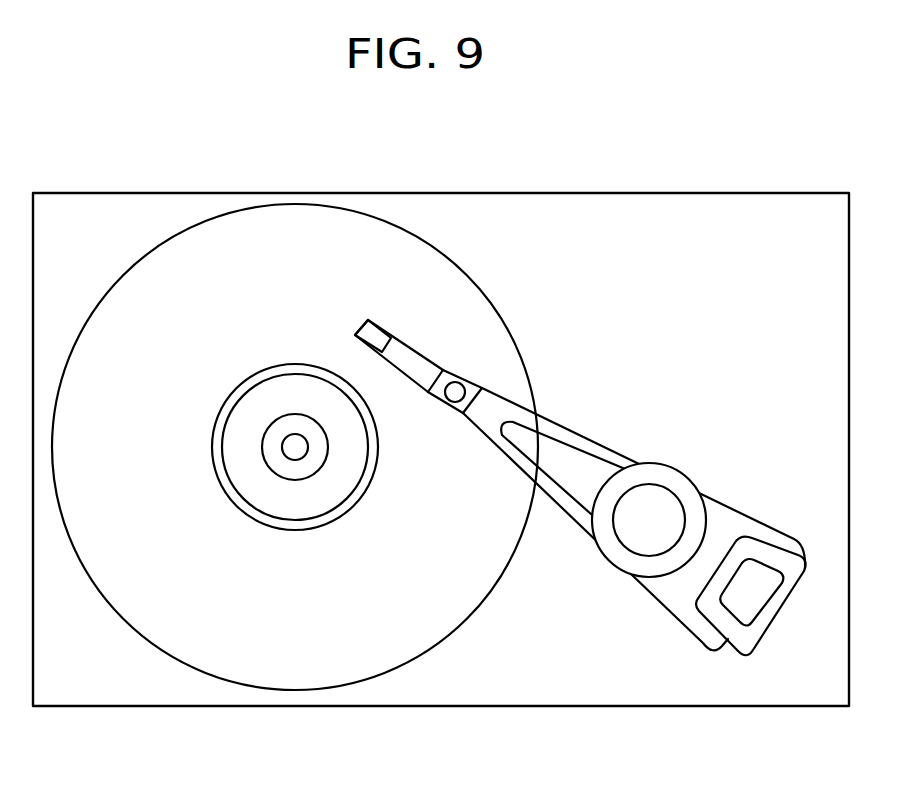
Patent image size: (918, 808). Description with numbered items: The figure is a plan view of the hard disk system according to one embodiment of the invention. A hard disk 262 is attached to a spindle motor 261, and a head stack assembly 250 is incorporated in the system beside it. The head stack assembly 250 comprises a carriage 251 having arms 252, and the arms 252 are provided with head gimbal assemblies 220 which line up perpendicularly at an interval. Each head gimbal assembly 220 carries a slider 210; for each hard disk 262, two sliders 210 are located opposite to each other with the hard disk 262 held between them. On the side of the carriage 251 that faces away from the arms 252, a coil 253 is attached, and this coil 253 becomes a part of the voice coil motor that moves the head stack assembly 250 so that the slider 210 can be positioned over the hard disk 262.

The slider 210 is at (379, 324).
The head gimbal assembly 220 is at (422, 388).
The head stack assembly 250 is at (583, 450).
The carriage 251 is at (660, 463).
The arm 252 is at (568, 515).
The coil 253 is at (778, 611).
The spindle motor 261 is at (297, 460).
The hard disk 262 is at (207, 675).